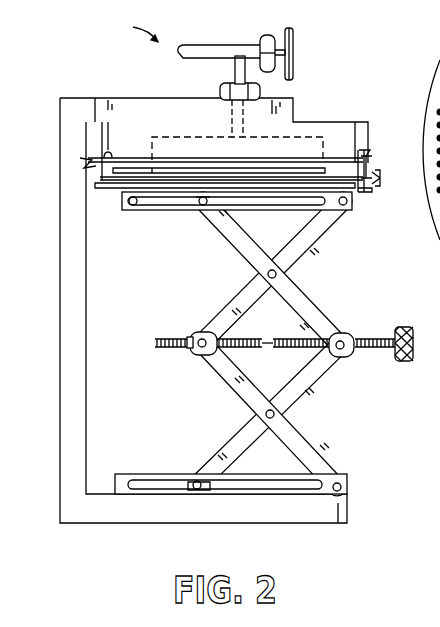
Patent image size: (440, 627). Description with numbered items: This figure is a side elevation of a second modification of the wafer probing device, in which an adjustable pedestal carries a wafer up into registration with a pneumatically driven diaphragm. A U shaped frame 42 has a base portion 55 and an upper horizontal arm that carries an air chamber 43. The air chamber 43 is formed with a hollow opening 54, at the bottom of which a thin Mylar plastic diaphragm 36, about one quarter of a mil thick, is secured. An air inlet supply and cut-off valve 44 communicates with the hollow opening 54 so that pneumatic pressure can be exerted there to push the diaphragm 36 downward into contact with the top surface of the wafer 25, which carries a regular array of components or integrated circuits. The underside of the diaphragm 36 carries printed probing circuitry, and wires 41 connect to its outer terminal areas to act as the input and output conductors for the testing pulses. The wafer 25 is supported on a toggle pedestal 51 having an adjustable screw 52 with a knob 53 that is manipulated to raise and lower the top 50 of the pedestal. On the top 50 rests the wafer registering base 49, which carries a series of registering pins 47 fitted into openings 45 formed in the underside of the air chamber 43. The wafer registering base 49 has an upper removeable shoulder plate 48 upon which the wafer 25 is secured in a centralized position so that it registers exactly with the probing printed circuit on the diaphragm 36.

The wafer 25 is at (213, 170).
The plastic diaphragm 36 is at (373, 160).
The wires 41 is at (88, 162).
The U shaped frame 42 is at (70, 261).
The air chamber 43 is at (337, 127).
The air inlet supply and cut-off valve 44 is at (243, 46).
The openings 45 is at (364, 156).
The registering pins 47 is at (363, 190).
The removeable shoulder plate 48 is at (185, 172).
The wafer registering base 49 is at (148, 178).
The top of the pedestal 50 is at (122, 190).
The toggle pedestal 51 is at (307, 250).
The adjustable screw 52 is at (376, 352).
The knob 53 is at (407, 327).
The hollow opening 54 is at (190, 140).
The base portion 55 is at (333, 522).